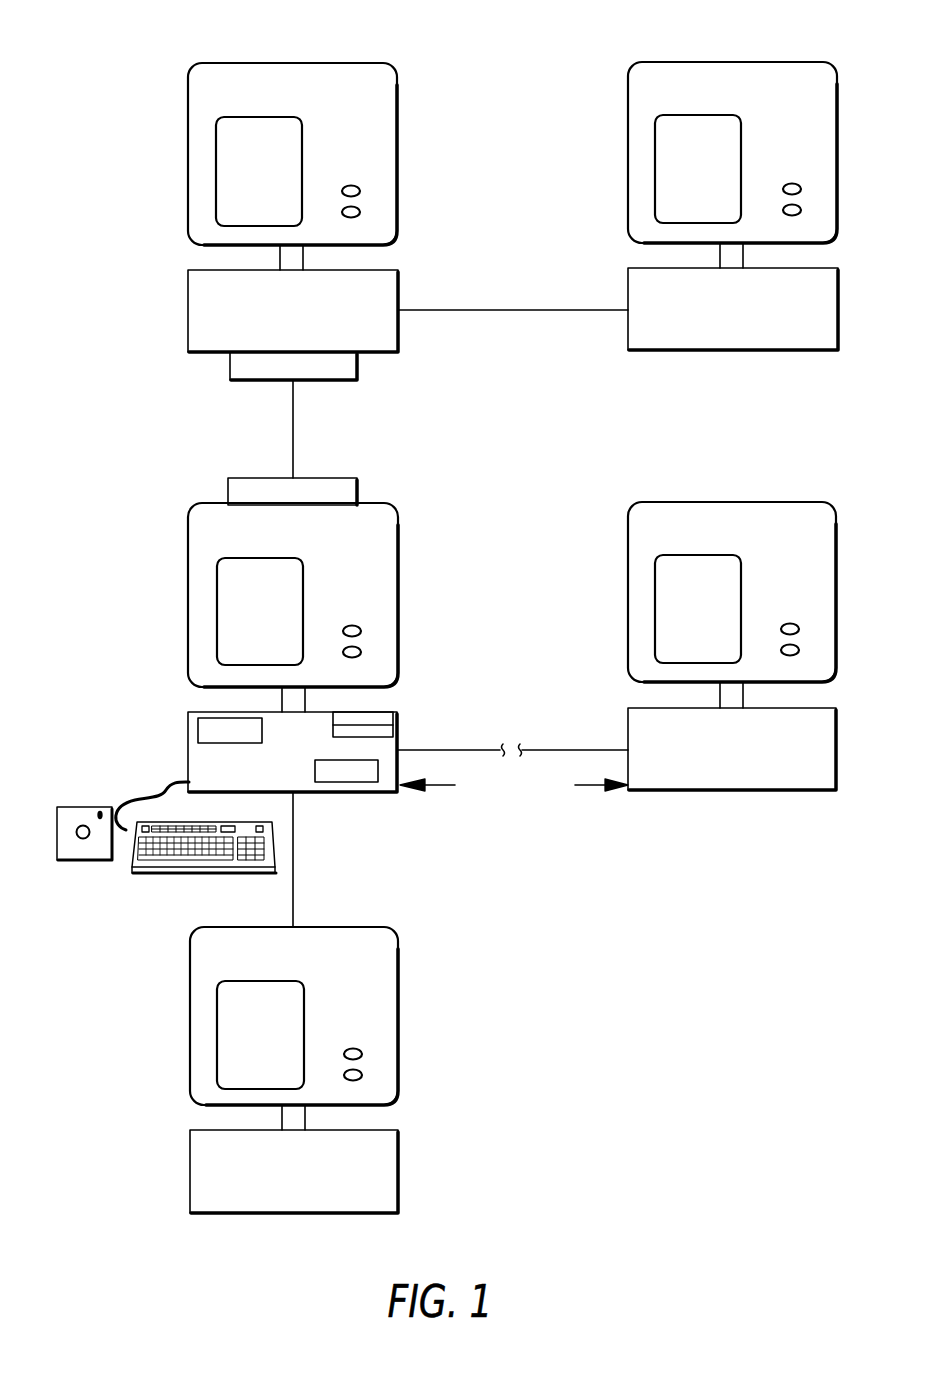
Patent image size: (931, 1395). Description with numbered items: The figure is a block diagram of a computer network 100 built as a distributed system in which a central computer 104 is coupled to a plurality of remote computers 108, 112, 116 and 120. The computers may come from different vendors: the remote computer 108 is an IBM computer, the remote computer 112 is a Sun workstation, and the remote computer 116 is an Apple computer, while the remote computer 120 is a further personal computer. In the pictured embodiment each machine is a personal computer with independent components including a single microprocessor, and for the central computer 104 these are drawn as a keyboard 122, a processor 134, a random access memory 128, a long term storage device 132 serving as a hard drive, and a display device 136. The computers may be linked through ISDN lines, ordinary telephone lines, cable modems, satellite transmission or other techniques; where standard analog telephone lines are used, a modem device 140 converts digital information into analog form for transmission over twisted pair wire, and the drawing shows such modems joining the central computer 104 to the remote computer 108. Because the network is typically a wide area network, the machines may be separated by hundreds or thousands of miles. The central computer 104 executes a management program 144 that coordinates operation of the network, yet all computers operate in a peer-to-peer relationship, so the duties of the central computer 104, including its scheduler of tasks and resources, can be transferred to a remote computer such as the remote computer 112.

The computer network 100 is at (128, 110).
The central computer 104 is at (367, 503).
The remote computer 108 is at (343, 63).
The remote computer 112 is at (785, 62).
The remote computer 116 is at (785, 502).
The remote computer 120 is at (351, 927).
The keyboard 122 is at (174, 876).
The random access memory 128 is at (188, 716).
The long term storage device 132 is at (373, 713).
The processor 134 is at (352, 778).
The display device 136 is at (217, 585).
The modem device 140 is at (228, 490).
The management program 144 is at (85, 807).